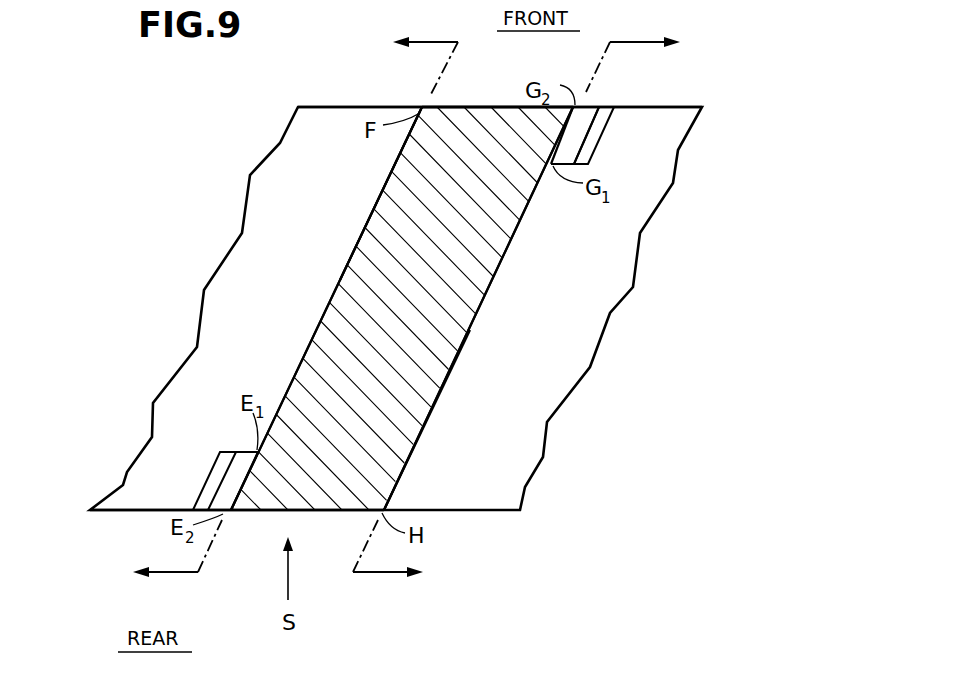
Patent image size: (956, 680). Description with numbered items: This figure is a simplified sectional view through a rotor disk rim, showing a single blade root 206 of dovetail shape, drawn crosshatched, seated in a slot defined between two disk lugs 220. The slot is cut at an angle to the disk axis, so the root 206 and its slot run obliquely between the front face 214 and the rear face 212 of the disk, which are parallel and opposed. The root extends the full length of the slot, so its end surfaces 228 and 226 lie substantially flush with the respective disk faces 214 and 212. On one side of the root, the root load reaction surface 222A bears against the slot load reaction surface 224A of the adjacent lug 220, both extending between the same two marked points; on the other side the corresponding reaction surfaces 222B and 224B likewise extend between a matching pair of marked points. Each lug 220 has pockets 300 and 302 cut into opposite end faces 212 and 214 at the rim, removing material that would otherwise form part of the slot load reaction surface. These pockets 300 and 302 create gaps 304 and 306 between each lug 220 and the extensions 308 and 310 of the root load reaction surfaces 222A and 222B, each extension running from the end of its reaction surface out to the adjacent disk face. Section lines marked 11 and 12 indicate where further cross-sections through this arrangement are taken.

The dovetail-shaped root 206 is at (447, 299).
The rear face 212 is at (123, 512).
The front face 214 is at (342, 107).
The disk lug 220 is at (300, 305).
The root load reaction surface 222A is at (392, 160).
The root load reaction surface 222B is at (423, 425).
The slot load reaction surface 224A is at (387, 193).
The slot load reaction surface 224B is at (508, 227).
The root end surface 226 is at (297, 512).
The root end surface 228 is at (457, 107).
The pocket 300 is at (213, 478).
The pocket 302 is at (600, 135).
The gap 304 is at (243, 455).
The gap 306 is at (590, 116).
The extension 308 is at (238, 473).
The extension 310 is at (570, 132).
The section line 11- 11 is at (271, 306).
The section line 12- 12 is at (546, 305).